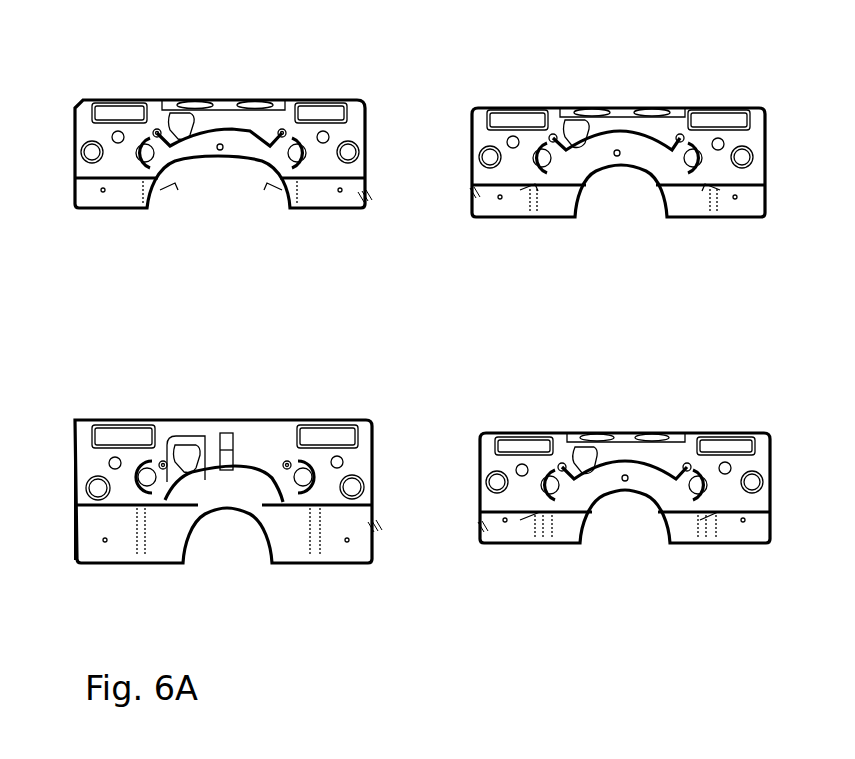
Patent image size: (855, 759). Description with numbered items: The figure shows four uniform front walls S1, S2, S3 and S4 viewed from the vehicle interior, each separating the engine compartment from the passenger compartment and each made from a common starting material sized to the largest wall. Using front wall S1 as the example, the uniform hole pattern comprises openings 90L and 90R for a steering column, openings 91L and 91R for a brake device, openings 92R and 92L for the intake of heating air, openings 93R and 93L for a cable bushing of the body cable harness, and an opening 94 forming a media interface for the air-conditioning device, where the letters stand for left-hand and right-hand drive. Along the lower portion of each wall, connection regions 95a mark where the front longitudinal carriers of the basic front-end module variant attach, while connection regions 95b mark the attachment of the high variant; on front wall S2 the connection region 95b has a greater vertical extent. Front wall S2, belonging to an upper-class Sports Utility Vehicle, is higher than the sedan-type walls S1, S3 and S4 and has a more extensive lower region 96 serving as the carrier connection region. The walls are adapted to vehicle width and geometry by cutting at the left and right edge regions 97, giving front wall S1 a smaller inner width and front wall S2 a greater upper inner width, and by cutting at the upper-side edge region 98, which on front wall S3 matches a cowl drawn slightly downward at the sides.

The front wall S1 is at (348, 198).
The front wall S2 is at (355, 550).
The front wall S3 is at (753, 108).
The front wall S4 is at (760, 433).
The opening for a steering column 90L is at (148, 162).
The opening for a steering column 90R is at (293, 162).
The opening for a brake device 91L is at (118, 143).
The opening for a brake device 91R is at (321, 143).
The opening for the intake of heating air 92L is at (318, 110).
The opening for the intake of heating air 92R is at (133, 110).
The opening for a cable bushing 93L is at (358, 152).
The opening for a cable bushing 93R is at (97, 155).
The opening 94 is at (180, 105).
The connection region 95a is at (143, 195).
The connection region 95b is at (530, 214).
The lower region 96 is at (367, 197).
The left and right edge region 97 is at (365, 132).
The upper-side edge region 98 is at (670, 105).